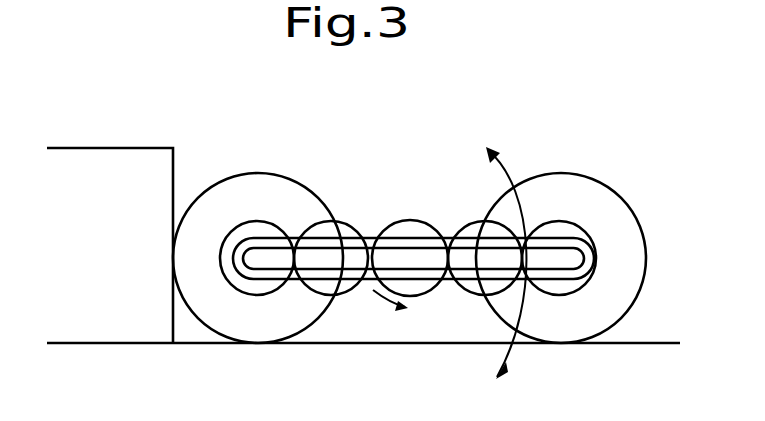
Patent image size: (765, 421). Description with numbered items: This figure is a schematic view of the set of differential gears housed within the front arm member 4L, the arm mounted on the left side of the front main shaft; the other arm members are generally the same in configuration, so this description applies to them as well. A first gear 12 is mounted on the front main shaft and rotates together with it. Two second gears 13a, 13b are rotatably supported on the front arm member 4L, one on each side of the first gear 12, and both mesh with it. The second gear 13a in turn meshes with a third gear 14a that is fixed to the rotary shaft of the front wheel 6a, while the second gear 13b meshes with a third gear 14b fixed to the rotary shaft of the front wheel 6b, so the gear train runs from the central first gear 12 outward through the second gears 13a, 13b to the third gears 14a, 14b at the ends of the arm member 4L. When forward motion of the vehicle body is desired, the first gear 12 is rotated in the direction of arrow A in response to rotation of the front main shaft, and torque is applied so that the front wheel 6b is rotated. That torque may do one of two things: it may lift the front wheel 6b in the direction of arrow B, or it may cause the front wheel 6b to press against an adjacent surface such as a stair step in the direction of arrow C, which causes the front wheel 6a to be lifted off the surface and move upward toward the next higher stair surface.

The front wheel 6a is at (222, 312).
The front wheel 6b is at (573, 197).
The front arm member 4L is at (273, 263).
The third gear 14a is at (262, 230).
The third gear 14b is at (575, 283).
The second gear 13a is at (324, 232).
The second gear 13b is at (472, 283).
The first gear 12 is at (404, 228).
The arrow A is at (391, 317).
The arrow B is at (499, 248).
The arrow C is at (505, 387).